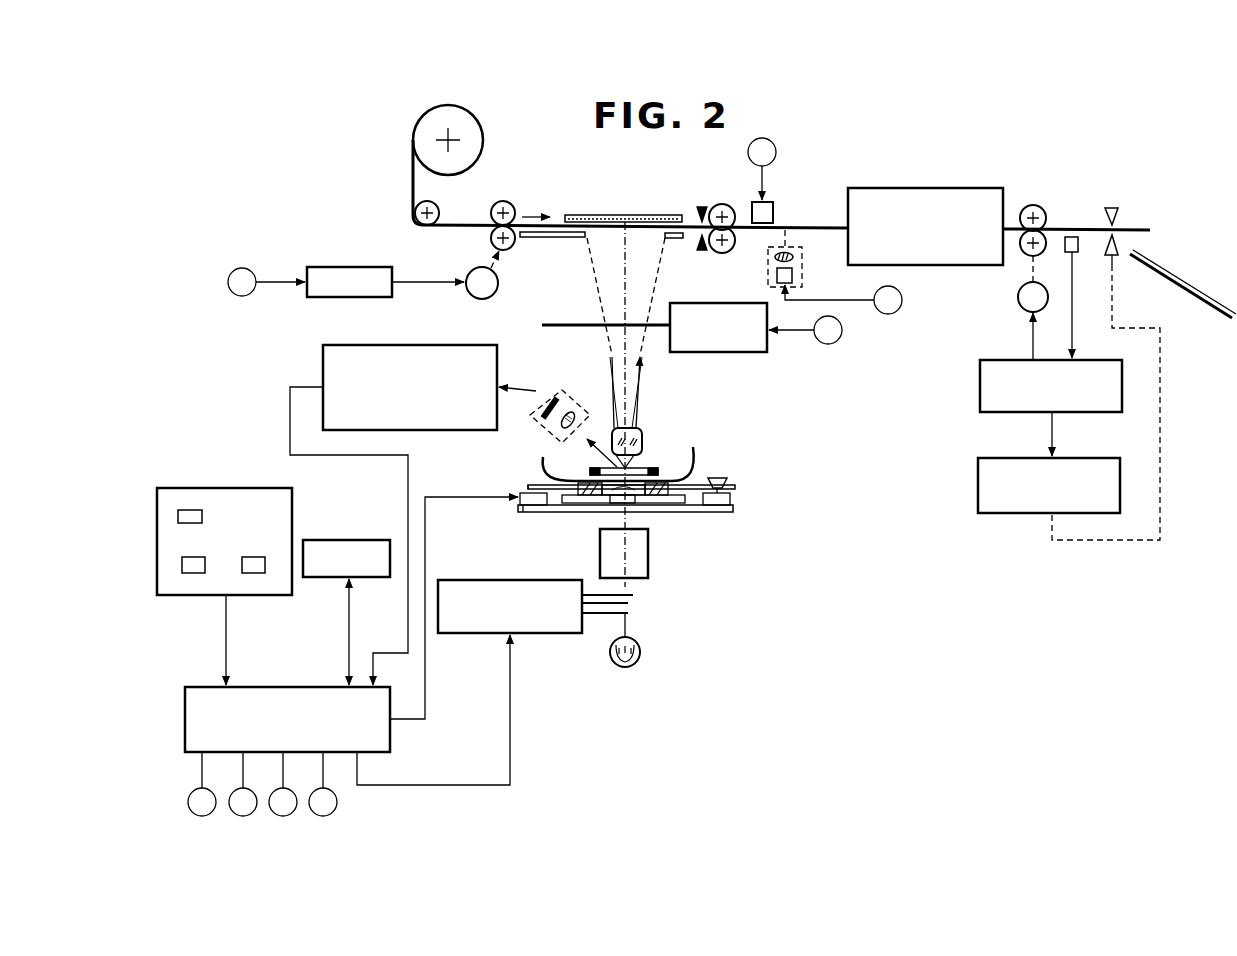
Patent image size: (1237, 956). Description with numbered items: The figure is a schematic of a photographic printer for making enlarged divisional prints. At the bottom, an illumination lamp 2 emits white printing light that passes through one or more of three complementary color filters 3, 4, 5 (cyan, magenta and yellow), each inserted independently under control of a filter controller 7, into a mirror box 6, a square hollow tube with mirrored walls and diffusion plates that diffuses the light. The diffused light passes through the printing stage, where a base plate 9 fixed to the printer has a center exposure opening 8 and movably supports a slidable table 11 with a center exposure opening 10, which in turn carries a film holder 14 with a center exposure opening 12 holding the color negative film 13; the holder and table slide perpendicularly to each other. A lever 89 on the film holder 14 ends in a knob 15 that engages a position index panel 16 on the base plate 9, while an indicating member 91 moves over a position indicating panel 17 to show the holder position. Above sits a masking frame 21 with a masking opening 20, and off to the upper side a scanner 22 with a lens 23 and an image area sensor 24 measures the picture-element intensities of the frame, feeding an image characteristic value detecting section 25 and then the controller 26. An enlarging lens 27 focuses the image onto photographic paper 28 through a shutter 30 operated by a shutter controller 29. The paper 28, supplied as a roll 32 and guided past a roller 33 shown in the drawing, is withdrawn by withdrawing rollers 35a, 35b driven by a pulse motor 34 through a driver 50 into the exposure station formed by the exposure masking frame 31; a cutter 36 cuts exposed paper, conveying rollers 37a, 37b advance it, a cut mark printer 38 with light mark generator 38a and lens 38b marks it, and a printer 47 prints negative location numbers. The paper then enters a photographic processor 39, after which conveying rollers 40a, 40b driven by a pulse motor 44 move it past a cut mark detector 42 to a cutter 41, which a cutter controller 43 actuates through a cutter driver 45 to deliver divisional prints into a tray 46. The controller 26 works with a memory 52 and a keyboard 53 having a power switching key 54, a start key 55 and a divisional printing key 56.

The illumination lamp 2 is at (640, 652).
The color filter 3 is at (598, 616).
The color filter 4 is at (632, 606).
The color filter 5 is at (637, 596).
The mirror box 6 is at (648, 572).
The filter controller 7 is at (533, 634).
The center exposure opening 8 is at (605, 505).
The base plate 9 is at (665, 512).
The center exposure opening 10 is at (612, 505).
The slidable table 11 is at (690, 512).
The center exposure opening 12 is at (640, 505).
The color negative film 13 is at (700, 458).
The film holder 14 is at (588, 484).
The knob 15 is at (722, 478).
The position index panel 16 is at (733, 508).
The position indicating panel 17 is at (535, 512).
The masking opening 20 is at (645, 467).
The masking frame 21 is at (660, 468).
The scanner 22 is at (568, 388).
The lens 23 is at (573, 412).
The image area sensor 24 is at (555, 390).
The image characteristic value detecting section 25 is at (412, 345).
The controller 26 is at (292, 687).
The enlarging lens 27 is at (633, 428).
The photographic paper 28 is at (463, 222).
The shutter controller 29 is at (728, 354).
The shutter 30 is at (636, 335).
The exposure masking frame 31 is at (675, 240).
The roll 32 is at (477, 142).
The guide roller 33 is at (416, 209).
The pulse motor 34 is at (498, 290).
The withdrawing roller 35a is at (503, 200).
The withdrawing roller 35b is at (511, 246).
The cutter 36 is at (697, 212).
The conveying roller 37a is at (722, 204).
The conveying roller 37b is at (722, 253).
The cut mark printer 38 is at (768, 268).
The light mark generator 38a is at (793, 282).
The lens 38b is at (795, 258).
The photographic processor 39 is at (925, 188).
The conveying roller 40a is at (1033, 205).
The conveying roller 40b is at (1025, 253).
The cutter 41 is at (1112, 208).
The cut mark detector 42 is at (1079, 246).
The cutter controller 43 is at (980, 385).
The pulse motor 44 is at (1018, 307).
The cutter driver 45 is at (978, 485).
The tray 46 is at (1218, 312).
The printer 47 is at (773, 207).
The driver 50 is at (348, 267).
The memory 52 is at (345, 540).
The keyboard 53 is at (220, 486).
The power switching key 54 is at (255, 573).
The start key 55 is at (188, 510).
The divisional printing key 56 is at (190, 573).
The lever 89 is at (737, 491).
The indicating member 91 is at (535, 486).